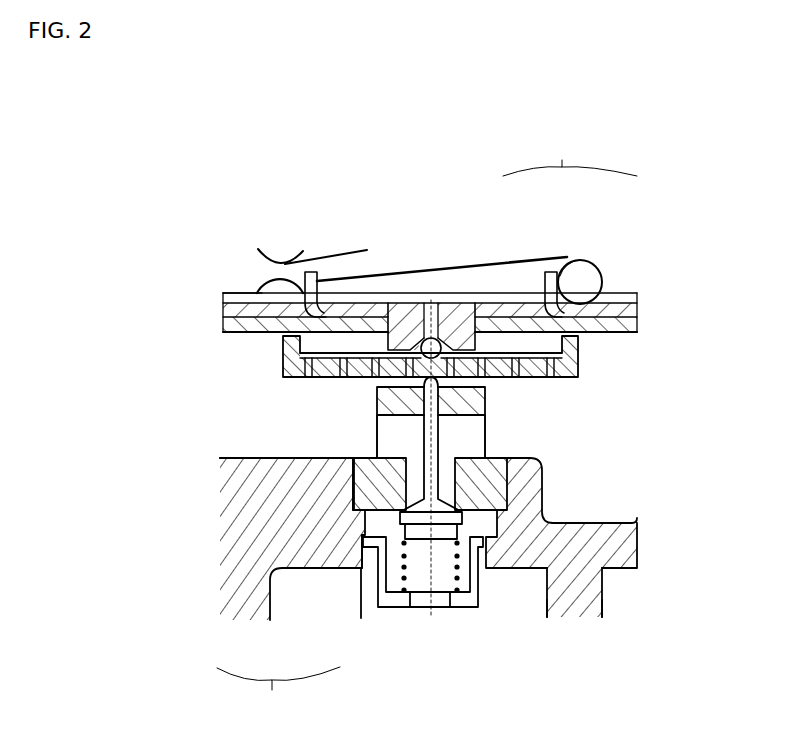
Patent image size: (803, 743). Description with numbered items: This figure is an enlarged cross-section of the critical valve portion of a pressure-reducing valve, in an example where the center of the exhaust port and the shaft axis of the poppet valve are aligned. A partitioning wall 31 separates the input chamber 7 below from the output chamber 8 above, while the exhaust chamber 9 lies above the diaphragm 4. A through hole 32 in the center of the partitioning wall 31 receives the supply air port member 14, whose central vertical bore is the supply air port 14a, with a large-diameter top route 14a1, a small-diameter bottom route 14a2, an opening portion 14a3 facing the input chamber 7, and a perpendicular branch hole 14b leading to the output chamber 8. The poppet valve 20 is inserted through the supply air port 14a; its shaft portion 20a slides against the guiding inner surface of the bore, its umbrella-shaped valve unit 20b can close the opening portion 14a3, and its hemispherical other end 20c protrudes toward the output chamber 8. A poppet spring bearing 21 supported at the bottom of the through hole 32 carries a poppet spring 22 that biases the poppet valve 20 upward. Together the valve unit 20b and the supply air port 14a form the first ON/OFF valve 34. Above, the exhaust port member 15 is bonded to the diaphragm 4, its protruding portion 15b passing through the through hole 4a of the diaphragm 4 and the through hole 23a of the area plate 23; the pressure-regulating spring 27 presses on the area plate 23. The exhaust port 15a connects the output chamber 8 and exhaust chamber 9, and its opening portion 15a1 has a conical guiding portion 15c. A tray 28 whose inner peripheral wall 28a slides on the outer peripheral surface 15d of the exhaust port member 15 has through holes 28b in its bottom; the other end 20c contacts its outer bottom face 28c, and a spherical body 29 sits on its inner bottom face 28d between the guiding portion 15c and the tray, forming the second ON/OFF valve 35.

The diaphragm 4 is at (640, 293).
The through hole 4a is at (300, 262).
The input chamber 7 is at (498, 598).
The output chamber 8 is at (350, 483).
The exhaust chamber 9 is at (431, 300).
The supply air port member 14 is at (378, 400).
The supply air port 14a is at (268, 575).
The top route 14a1 is at (604, 578).
The bottom route 14a2 is at (487, 422).
The opening portion 14a3 is at (362, 540).
The branch hole 14b is at (360, 438).
The exhaust port member 15 is at (283, 275).
The exhaust port 15a is at (488, 268).
The opening portion 15a1 is at (390, 273).
The protruding portion 15b is at (440, 300).
The guiding portion 15c is at (620, 331).
The outer peripheral surface 15d is at (240, 296).
The poppet valve 20 is at (507, 493).
The shaft portion 20a is at (362, 472).
The valve unit 20b is at (360, 585).
The other end 20c is at (500, 378).
The poppet spring bearing 21 is at (383, 607).
The poppet spring 22 is at (480, 600).
The area plate 23 is at (262, 305).
The through hole 23a is at (588, 262).
The pressure-regulating spring 27 is at (243, 292).
The tray 28 is at (580, 358).
The inner peripheral wall 28a is at (562, 292).
The through holes 28b is at (283, 345).
The outer bottom face 28c is at (300, 366).
The inner bottom face 28d is at (292, 282).
The spherical body 29 is at (500, 280).
The partitioning wall 31 is at (358, 500).
The through hole 32 is at (594, 615).
The first ON/OFF valve 34 is at (278, 693).
The second ON/OFF valve 35 is at (477, 221).